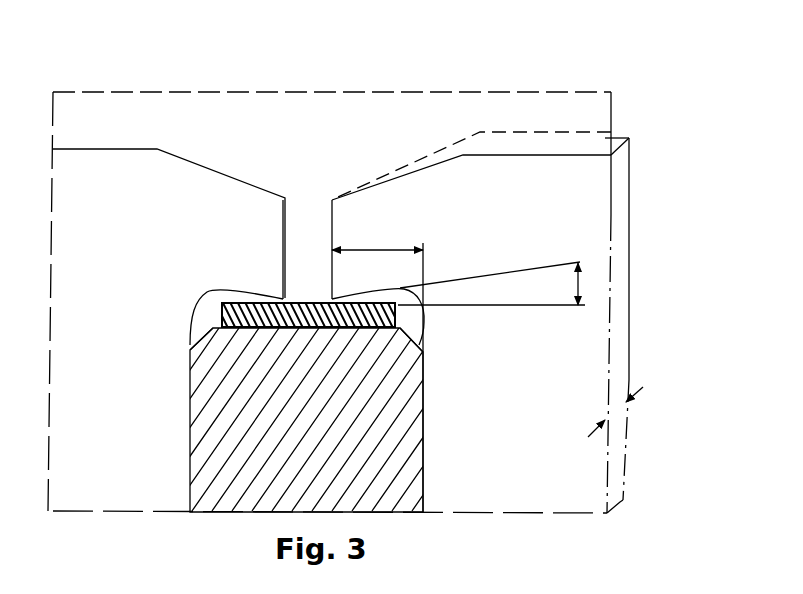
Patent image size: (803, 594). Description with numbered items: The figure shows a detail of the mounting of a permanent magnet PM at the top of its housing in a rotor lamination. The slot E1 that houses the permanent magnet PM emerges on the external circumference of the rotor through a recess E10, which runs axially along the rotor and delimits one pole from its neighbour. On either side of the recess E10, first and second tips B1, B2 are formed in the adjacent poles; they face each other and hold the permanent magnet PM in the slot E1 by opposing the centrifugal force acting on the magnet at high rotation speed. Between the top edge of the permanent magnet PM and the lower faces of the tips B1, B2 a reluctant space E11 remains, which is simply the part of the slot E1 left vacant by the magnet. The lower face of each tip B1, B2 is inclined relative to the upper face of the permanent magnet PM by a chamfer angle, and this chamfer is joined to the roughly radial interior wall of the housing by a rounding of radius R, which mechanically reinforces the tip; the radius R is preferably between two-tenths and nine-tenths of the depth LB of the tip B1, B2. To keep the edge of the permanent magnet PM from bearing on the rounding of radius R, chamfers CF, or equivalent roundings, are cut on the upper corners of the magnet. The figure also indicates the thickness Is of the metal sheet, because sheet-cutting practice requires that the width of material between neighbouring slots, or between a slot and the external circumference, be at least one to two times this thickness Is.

The second tip B2 is at (213, 192).
The first tip B1 is at (405, 194).
The recess E10 is at (307, 222).
The reluctant space E11 is at (222, 308).
The radius of rounding R is at (203, 282).
The chamfer CF is at (203, 333).
The permanent magnet PM is at (420, 422).
The slot E1 is at (426, 471).
The depth of the tip LB is at (377, 240).
The thickness of the metal sheet Is is at (614, 400).